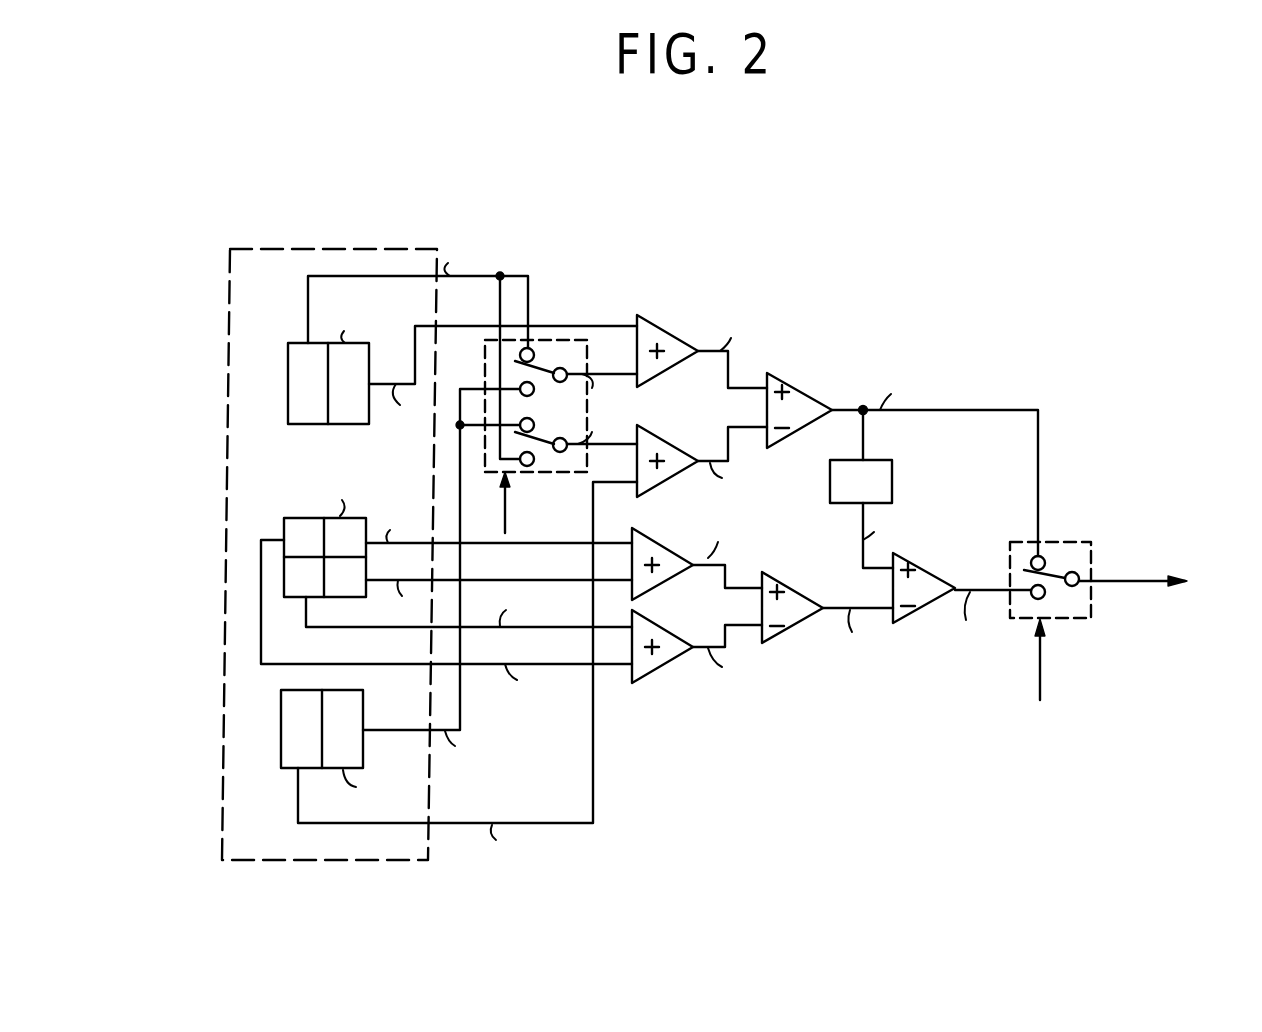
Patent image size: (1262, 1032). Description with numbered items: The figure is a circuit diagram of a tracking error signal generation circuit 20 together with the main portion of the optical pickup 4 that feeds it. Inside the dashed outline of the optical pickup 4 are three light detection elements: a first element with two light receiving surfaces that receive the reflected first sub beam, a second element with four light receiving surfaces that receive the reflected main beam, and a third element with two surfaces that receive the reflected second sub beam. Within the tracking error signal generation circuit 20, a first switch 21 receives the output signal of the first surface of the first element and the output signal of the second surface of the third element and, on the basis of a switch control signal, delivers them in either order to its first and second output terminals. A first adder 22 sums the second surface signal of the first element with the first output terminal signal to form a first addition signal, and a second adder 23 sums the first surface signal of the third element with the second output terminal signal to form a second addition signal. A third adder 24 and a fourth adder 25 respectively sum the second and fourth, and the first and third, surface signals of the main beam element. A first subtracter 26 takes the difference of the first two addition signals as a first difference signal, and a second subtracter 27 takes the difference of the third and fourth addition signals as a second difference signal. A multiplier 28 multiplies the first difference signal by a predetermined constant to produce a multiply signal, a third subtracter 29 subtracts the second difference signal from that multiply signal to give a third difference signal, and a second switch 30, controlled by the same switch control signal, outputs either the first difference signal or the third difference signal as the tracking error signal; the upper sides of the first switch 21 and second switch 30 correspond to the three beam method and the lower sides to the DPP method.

The optical pickup 4 is at (280, 248).
The tracking error signal generation circuit 20 is at (795, 308).
The first switch 21 is at (565, 338).
The first adder 22 is at (662, 320).
The second adder 23 is at (660, 438).
The third adder 24 is at (668, 520).
The fourth adder 25 is at (676, 657).
The first subtracter 26 is at (806, 389).
The second subtracter 27 is at (803, 590).
The multiplier 28 is at (893, 463).
The third subtracter 29 is at (925, 566).
The second switch 30 is at (1062, 540).